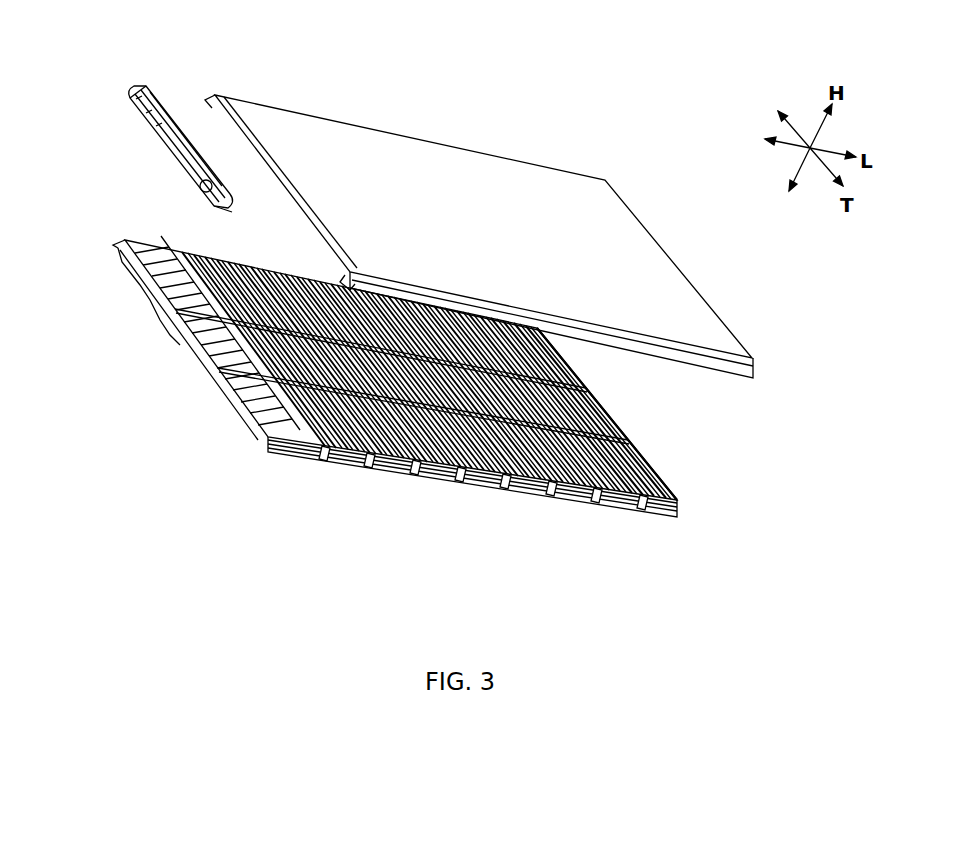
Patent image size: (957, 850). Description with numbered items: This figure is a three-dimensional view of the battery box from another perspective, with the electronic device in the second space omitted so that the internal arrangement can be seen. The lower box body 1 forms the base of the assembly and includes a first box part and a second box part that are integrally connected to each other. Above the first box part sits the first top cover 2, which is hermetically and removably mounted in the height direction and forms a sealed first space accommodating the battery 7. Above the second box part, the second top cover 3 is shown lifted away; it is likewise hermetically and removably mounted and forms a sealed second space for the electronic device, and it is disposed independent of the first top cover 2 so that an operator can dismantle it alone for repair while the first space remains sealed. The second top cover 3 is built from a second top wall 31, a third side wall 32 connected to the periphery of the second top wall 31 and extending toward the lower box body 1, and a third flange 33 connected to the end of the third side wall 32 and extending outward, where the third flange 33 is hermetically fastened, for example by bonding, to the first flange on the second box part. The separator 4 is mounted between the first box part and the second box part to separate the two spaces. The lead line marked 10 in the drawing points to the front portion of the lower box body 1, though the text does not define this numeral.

The lower box body 1 is at (310, 474).
The first top cover 2 is at (522, 172).
The second top cover 3 is at (139, 113).
The second top wall 31 is at (150, 100).
The third side wall 32 is at (130, 107).
The third flange 33 is at (148, 88).
The separator 4 is at (118, 262).
The battery 7 is at (642, 440).
The bottom plate 10 is at (620, 497).